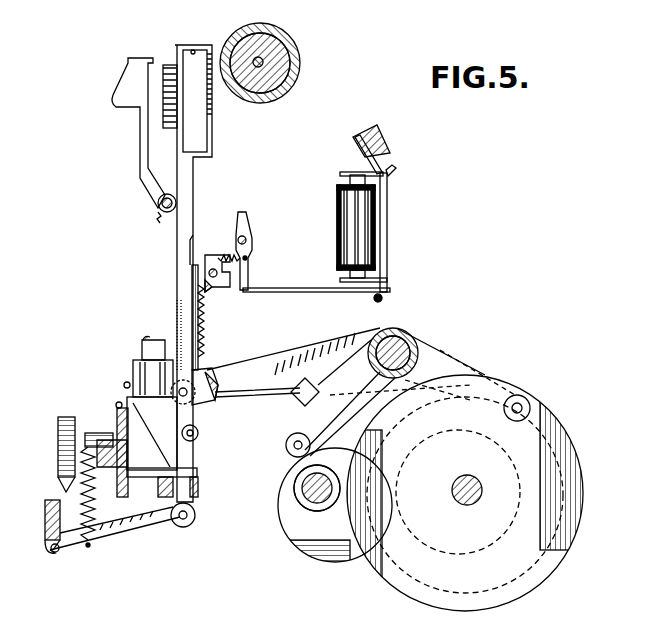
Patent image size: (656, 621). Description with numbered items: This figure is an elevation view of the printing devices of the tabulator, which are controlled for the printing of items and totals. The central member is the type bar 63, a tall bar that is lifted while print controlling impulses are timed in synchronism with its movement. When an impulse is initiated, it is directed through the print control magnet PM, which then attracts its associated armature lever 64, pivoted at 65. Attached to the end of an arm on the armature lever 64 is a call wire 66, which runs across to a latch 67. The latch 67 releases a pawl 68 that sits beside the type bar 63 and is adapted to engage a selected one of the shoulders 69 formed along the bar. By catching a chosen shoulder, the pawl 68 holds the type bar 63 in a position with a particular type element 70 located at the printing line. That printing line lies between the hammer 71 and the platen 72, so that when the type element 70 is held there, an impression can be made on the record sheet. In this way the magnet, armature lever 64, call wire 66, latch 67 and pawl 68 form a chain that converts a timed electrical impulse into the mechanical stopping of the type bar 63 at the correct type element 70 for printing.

The type bar 63 is at (188, 240).
The armature lever 64 is at (348, 170).
The pivot 65 is at (392, 172).
The call wire 66 is at (290, 292).
The latch 67 is at (248, 267).
The pawl 68 is at (213, 287).
The shoulders 69 is at (203, 345).
The type element 70 is at (172, 63).
The hammer 71 is at (130, 90).
The platen 72 is at (298, 41).
The print control magnet PM is at (353, 230).